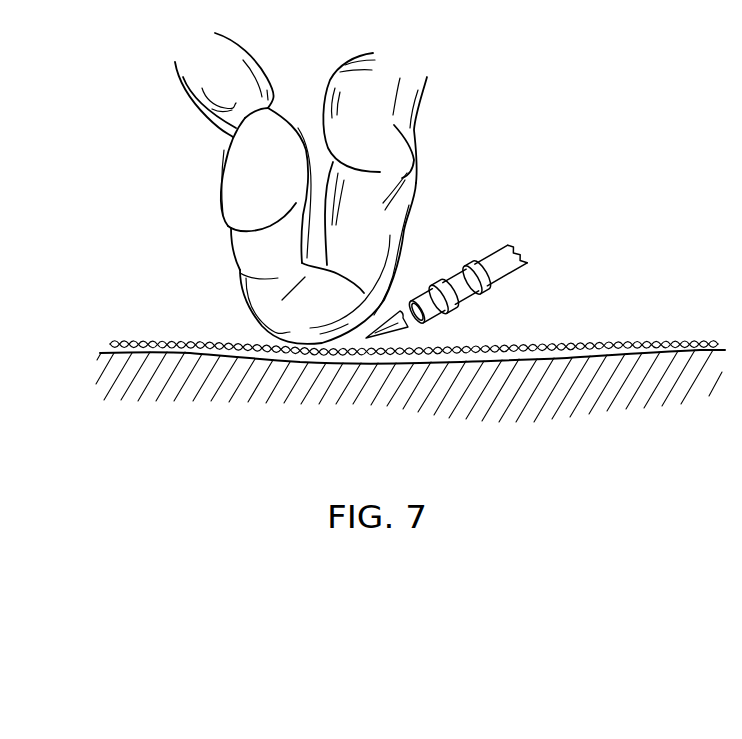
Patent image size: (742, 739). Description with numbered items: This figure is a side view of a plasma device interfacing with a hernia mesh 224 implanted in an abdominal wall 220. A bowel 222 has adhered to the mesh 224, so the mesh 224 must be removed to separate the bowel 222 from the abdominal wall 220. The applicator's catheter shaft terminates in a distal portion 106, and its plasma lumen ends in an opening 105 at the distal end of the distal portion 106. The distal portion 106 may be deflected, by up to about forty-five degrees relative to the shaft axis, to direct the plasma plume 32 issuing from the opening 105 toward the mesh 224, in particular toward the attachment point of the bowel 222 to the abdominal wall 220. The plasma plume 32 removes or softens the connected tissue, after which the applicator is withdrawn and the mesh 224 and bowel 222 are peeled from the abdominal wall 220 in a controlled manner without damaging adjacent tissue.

The bowel 222 is at (388, 154).
The abdominal wall 220 is at (411, 450).
The hernia mesh 224 is at (579, 341).
The opening 105 is at (423, 317).
The distal portion 106 is at (453, 268).
The plasma plume 32 is at (400, 311).